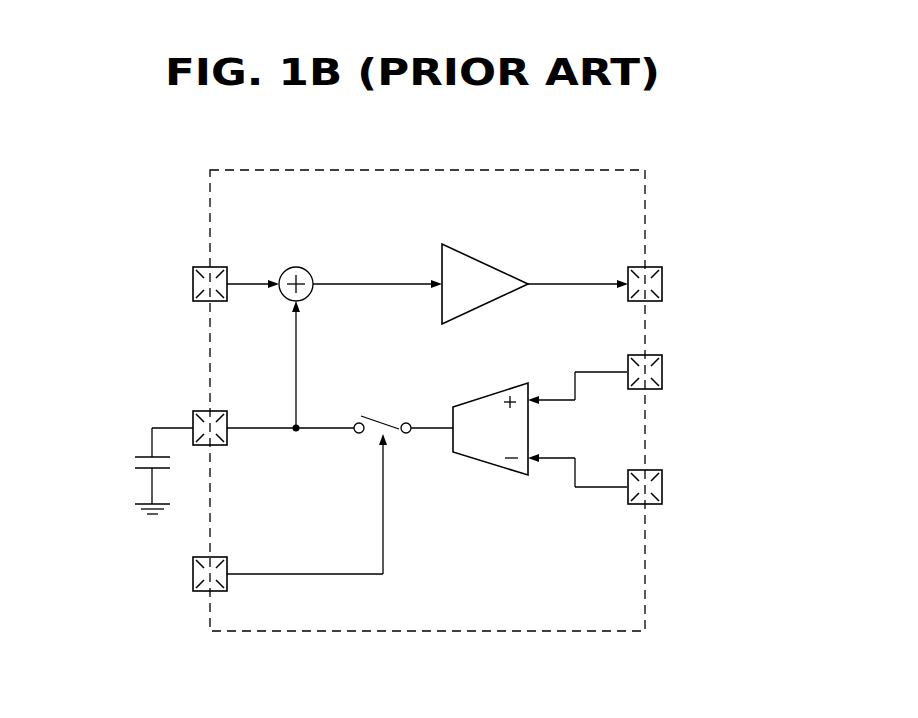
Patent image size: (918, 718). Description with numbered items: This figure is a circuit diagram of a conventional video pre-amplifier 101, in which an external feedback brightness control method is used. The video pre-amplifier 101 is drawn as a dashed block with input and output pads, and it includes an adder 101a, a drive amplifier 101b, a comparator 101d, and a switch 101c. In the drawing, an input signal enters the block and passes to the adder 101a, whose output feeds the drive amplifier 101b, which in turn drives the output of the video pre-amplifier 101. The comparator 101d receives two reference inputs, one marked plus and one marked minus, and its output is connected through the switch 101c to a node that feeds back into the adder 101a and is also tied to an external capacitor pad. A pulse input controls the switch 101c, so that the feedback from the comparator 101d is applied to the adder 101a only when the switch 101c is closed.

The video pre-amplifier 101 is at (632, 201).
The adder 101a is at (296, 267).
The drive amplifier 101b is at (482, 262).
The switch 101c is at (385, 412).
The comparator 101d is at (488, 466).